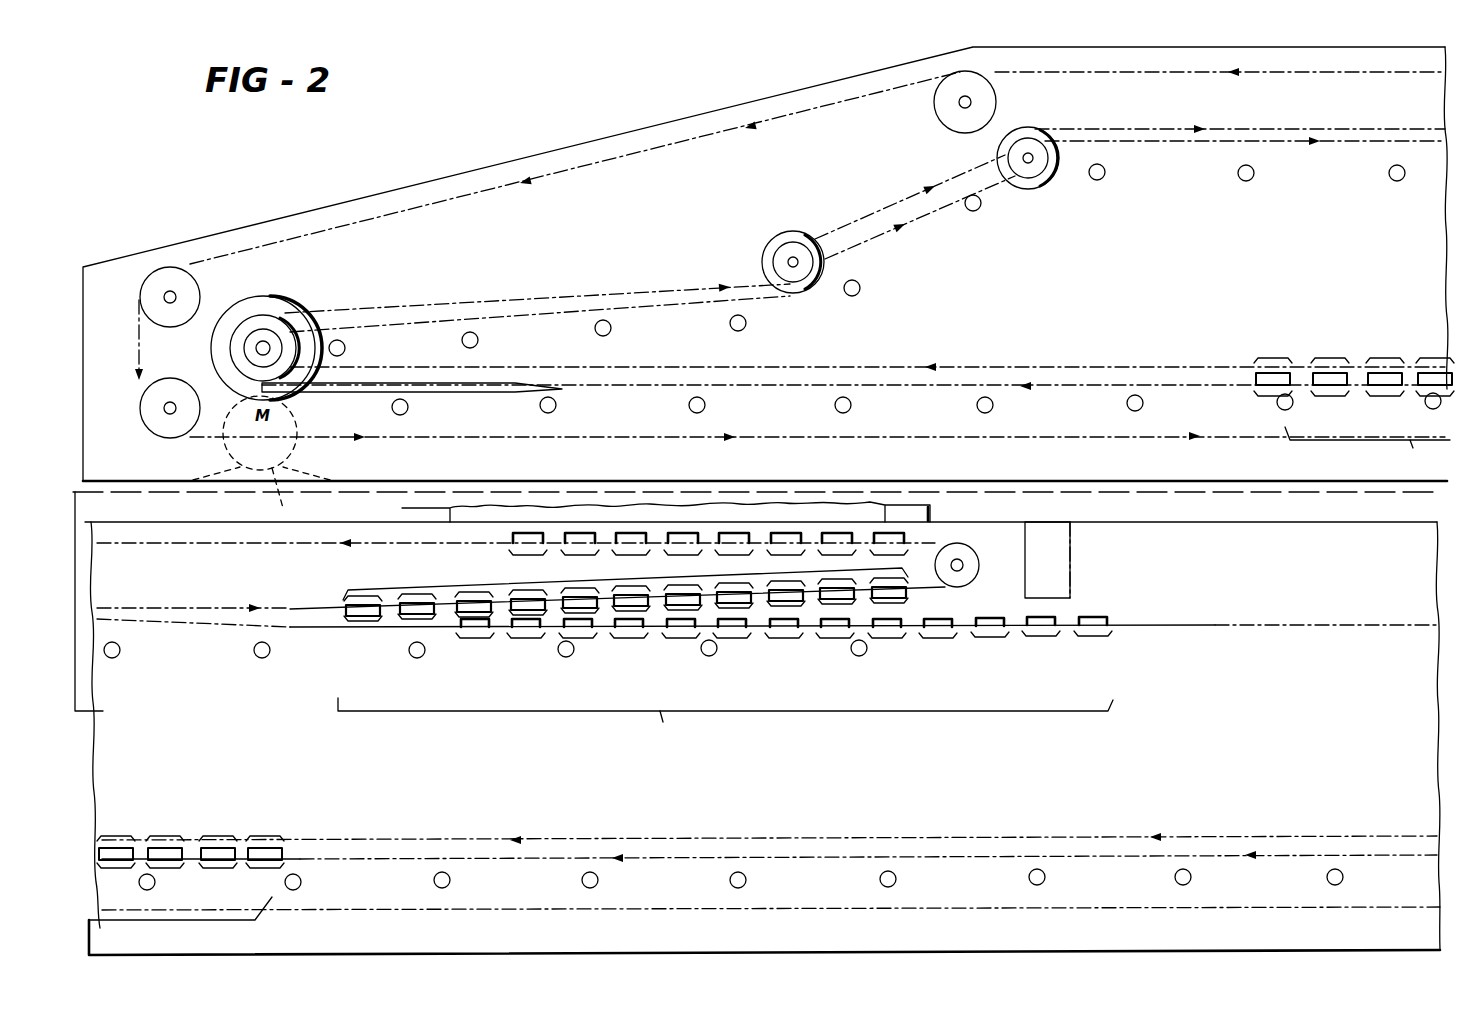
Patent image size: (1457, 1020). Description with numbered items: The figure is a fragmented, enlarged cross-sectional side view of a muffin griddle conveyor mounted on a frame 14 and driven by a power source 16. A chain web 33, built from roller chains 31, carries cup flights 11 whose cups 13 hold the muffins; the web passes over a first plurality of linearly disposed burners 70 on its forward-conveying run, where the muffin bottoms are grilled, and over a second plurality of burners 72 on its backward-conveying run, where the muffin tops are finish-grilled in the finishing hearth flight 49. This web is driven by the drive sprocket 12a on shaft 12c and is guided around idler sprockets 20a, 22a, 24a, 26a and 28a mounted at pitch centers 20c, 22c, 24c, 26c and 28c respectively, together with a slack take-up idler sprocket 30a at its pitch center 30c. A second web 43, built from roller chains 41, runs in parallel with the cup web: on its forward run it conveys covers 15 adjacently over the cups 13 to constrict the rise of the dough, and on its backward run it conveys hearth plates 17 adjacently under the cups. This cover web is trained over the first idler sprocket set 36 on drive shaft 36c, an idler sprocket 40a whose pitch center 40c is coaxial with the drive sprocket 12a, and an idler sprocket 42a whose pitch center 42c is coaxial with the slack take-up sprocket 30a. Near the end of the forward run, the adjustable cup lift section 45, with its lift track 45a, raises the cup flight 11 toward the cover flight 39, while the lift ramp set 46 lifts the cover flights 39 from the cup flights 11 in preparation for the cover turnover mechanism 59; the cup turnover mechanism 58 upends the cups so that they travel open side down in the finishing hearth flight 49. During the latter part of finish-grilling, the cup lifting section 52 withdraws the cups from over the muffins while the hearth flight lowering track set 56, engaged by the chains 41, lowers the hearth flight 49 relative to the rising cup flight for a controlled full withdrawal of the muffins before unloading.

The cup flight 11 is at (1395, 407).
The drive sprocket 12a is at (250, 325).
The drive sprocket shaft 12c is at (263, 348).
The cup 13 is at (787, 533).
The frame 14 is at (86, 400).
The muffin cup cover 15 is at (1333, 360).
The power source 16 is at (261, 457).
The hearth plate 17 is at (760, 630).
The second idler sprocket 20a is at (186, 399).
The second idler sprocket pitch center 20c is at (168, 412).
The third idler sprocket 22a is at (180, 280).
The third idler sprocket pitch center 22c is at (167, 294).
The fourth idler sprocket 24a is at (995, 101).
The fourth idler sprocket pitch center 24c is at (960, 104).
The fifth idler sprocket 26a is at (975, 555).
The fifth idler sprocket pitch center 26c is at (960, 568).
The sixth idler sprocket 28a is at (1012, 172).
The sixth idler sprocket center 28c is at (1028, 163).
The pulley 30a is at (783, 236).
The pulley center 30c is at (791, 267).
The roller chain 31 is at (1338, 73).
The chain web 33 is at (1112, 54).
The first idler sprocket set 36 is at (1040, 172).
The drive shaft 36c is at (1052, 162).
The cover flight 39 is at (1392, 318).
The third idler sprocket 40a is at (275, 335).
The third idler sprocket pitch center 40c is at (295, 345).
The roller chain 41 is at (1175, 142).
The fourth idler sprocket 42a is at (800, 255).
The fourth idler sprocket pitch center 42c is at (818, 278).
The web 43 is at (1360, 152).
The cup lift section 45 is at (1367, 446).
The cup flight lift track 45a is at (180, 920).
The cover flight lift ramp set 46 is at (430, 395).
The finishing hearth flight 49 is at (1370, 203).
The cup lifting section 52 is at (578, 583).
The hearth flight lowering track set 56 is at (725, 726).
The cup turnover mechanism 58 is at (197, 344).
The cover turnover mechanism 59 is at (358, 364).
The first plurality of burners 70 is at (699, 413).
The second plurality of burners 72 is at (337, 352).